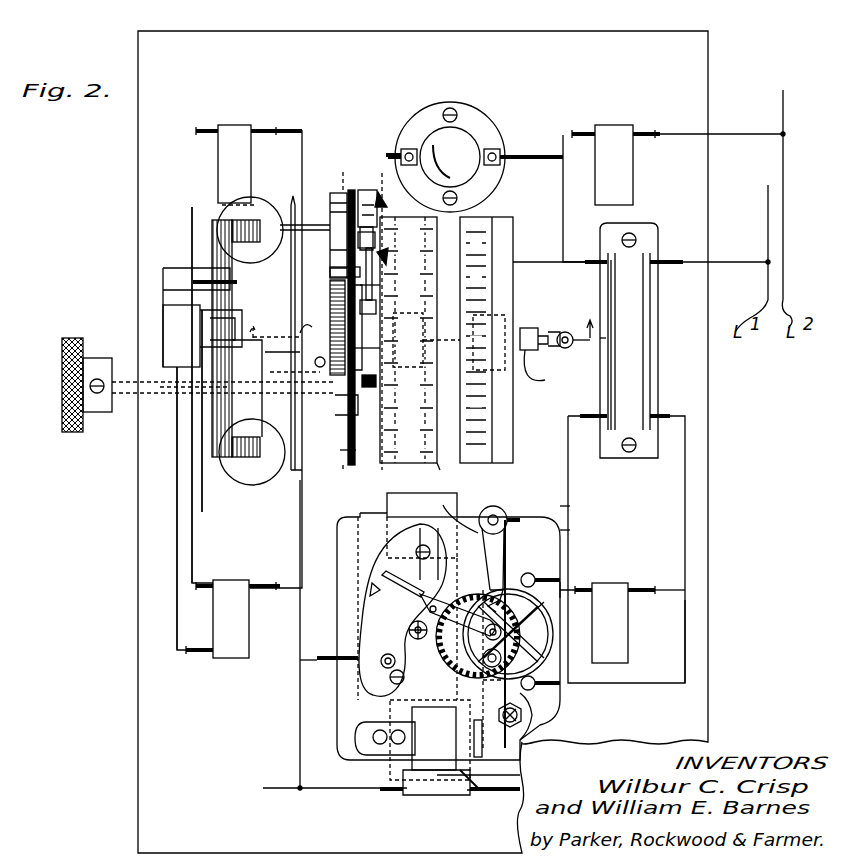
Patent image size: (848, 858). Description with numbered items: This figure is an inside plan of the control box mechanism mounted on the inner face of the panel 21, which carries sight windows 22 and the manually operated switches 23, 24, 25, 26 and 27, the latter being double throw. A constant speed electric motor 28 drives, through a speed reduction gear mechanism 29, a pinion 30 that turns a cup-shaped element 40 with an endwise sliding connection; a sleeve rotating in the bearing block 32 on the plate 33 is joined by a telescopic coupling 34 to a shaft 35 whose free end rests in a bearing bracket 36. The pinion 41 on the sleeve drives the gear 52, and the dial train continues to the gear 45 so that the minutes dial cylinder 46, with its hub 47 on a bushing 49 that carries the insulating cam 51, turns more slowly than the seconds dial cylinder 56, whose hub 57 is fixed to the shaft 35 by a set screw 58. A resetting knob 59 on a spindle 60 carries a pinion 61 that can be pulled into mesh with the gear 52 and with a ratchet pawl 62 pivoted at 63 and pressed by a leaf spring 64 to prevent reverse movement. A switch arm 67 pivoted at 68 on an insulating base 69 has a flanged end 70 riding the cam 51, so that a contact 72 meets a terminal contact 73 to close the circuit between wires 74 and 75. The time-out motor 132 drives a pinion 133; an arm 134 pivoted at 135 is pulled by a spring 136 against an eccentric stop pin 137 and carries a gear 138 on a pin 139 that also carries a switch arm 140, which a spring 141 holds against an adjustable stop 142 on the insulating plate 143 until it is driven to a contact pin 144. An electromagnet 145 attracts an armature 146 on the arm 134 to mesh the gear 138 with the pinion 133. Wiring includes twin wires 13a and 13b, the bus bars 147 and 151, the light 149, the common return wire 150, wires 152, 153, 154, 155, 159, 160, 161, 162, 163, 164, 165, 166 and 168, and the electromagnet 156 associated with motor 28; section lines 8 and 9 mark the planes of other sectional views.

The section line 8- 8 is at (337, 175).
The section line 9- 9 is at (375, 176).
The wire of twin wire 13a is at (758, 122).
The wire of twin wire 13b is at (742, 254).
The panel 21 is at (140, 175).
The sight windows 22 is at (452, 335).
The manually operated switch 23 is at (218, 165).
The manually operated switch 24 is at (622, 187).
The manually operated switch 25 is at (615, 630).
The manually operated switch 26 is at (385, 760).
The double throw switch 27 is at (238, 630).
The electric motor 28 is at (214, 246).
The speed reduction gear mechanism 29 is at (257, 275).
The pinion 30 is at (274, 322).
The bearing block 32 is at (298, 352).
The plate 33 is at (292, 208).
The telescopic coupling 34 is at (470, 355).
The shaft 35 is at (580, 324).
The bearing bracket 36 is at (568, 349).
The cup-shaped element 40 is at (300, 333).
The pinion 41 is at (335, 330).
The gear 45 is at (345, 405).
The minutes dial cylinder 46 is at (430, 463).
The hub 47 is at (378, 348).
The bushing 49 is at (345, 362).
The cam 51 is at (335, 300).
The gear 52 is at (300, 372).
The seconds dial cylinder 56 is at (490, 217).
The hub 57 is at (528, 328).
The set screw 58 is at (545, 382).
The resetting knob 59 is at (60, 338).
The spindle 60 is at (120, 380).
The pinion 61 is at (378, 385).
The ratchet pawl 62 is at (338, 432).
The pivot 63 is at (356, 450).
The leaf spring 64 is at (260, 468).
The switch arm 67 is at (378, 288).
The pivot 68 is at (350, 268).
The base 69 is at (327, 220).
The flanged end 70 is at (376, 308).
The contact 72 is at (378, 232).
The terminal contact 73 is at (368, 194).
The wire 74 is at (385, 200).
The wire 75 is at (386, 256).
The time-out motor 132 is at (335, 650).
The pinion 133 is at (388, 660).
The arm 134 is at (510, 540).
The pivot 135 is at (505, 515).
The spring 136 is at (407, 596).
The stop pin 137 is at (530, 712).
The gear 138 is at (568, 590).
The pin 139 is at (470, 675).
The switch arm 140 is at (438, 601).
The spring 141 is at (440, 612).
The adjustable stop 142 is at (407, 570).
The plate 143 is at (367, 588).
The contact pin 144 is at (388, 668).
The electromagnet 145 is at (432, 760).
The armature 146 is at (560, 262).
The bus bar 147 is at (612, 338).
The light 149 is at (460, 140).
The common return wire 150 is at (388, 155).
The bus bar 151 is at (652, 303).
The wire 152 is at (573, 477).
The wire 153 is at (302, 133).
The wire 154 is at (192, 492).
The wire 155 is at (202, 505).
The electromagnet 156 is at (168, 316).
The wire 159 is at (200, 125).
The wire 160 is at (685, 650).
The wire 161 is at (543, 573).
The wire 162 is at (570, 532).
The wire 163 is at (525, 732).
The wire 164 is at (520, 760).
The wire 165 is at (685, 590).
The wire 166 is at (300, 748).
The wire 168 is at (570, 510).